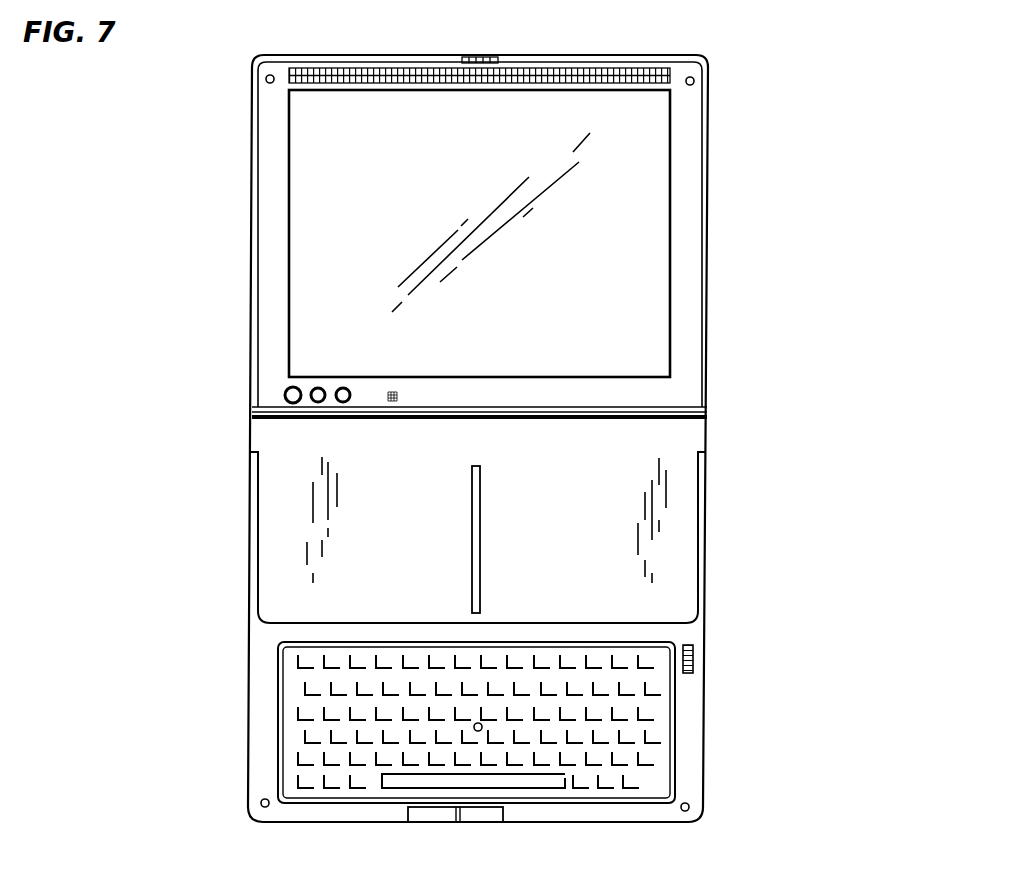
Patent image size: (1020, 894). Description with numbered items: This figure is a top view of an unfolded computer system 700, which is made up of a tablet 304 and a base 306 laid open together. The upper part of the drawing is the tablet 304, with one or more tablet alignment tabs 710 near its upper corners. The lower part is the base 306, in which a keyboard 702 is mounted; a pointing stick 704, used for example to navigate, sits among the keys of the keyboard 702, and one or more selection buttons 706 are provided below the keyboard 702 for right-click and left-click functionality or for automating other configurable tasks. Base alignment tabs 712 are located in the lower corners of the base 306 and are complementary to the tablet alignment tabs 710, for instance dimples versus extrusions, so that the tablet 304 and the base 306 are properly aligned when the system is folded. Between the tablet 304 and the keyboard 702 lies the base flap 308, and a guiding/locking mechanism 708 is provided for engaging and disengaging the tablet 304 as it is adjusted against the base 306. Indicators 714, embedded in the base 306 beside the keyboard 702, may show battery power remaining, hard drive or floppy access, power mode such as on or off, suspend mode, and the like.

The computer system 700 is at (805, 108).
The tablet 304 is at (272, 222).
The base 306 is at (250, 518).
The base flap 308 is at (265, 433).
The keyboard 702 is at (303, 685).
The pointing stick 704 is at (482, 731).
The selection buttons 706 is at (477, 818).
The guiding/locking mechanism 708 is at (475, 565).
The tablet alignment tabs 710 is at (266, 78).
The base alignment tabs 712 is at (261, 803).
The indicators 714 is at (695, 668).